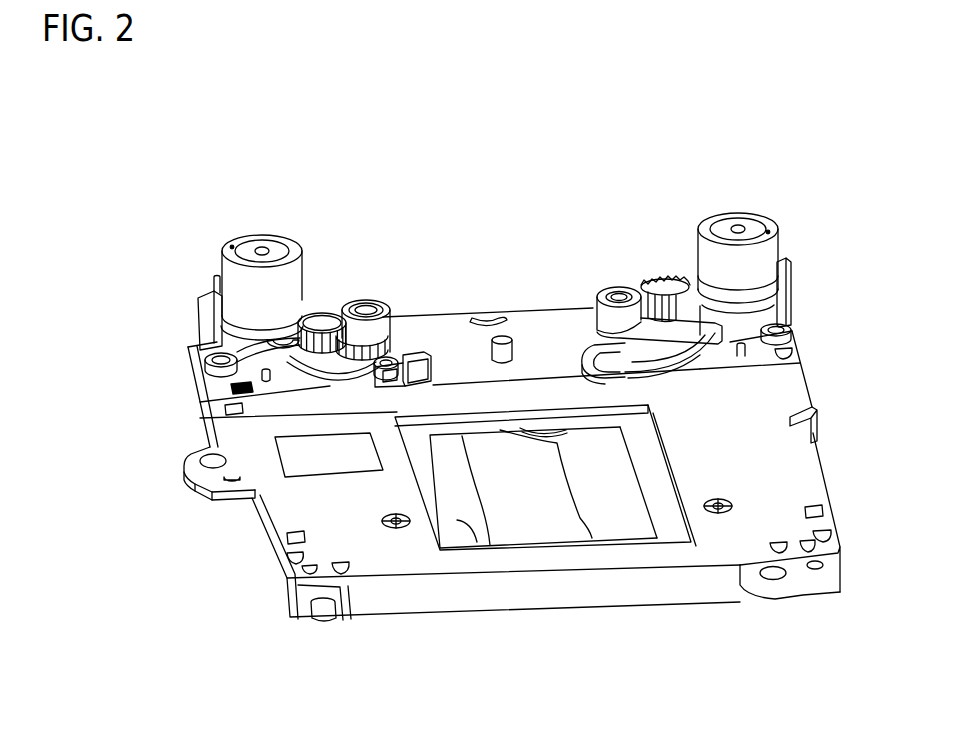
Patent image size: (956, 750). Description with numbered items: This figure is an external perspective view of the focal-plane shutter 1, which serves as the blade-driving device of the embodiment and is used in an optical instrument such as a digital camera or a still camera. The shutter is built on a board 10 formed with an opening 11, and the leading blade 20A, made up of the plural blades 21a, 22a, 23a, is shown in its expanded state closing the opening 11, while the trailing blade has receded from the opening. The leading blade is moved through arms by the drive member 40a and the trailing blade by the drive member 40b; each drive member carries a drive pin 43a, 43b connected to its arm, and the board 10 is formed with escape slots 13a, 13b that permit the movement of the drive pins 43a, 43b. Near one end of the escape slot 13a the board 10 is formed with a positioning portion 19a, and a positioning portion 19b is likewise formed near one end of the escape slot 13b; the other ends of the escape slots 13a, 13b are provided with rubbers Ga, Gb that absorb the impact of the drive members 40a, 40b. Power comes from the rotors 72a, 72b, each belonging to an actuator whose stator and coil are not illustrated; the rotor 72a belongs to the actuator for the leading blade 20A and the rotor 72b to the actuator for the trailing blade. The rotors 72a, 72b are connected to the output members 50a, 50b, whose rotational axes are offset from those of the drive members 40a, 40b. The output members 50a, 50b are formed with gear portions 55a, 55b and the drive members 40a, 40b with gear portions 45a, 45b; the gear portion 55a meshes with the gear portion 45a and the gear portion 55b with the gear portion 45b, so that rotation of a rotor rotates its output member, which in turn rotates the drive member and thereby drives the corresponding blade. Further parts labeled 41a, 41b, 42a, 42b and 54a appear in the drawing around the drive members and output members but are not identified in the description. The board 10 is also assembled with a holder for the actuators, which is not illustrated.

The focal-plane shutter 1 is at (574, 165).
The board 10 is at (413, 618).
The opening 11 is at (473, 508).
The escape slot 13a is at (230, 385).
The escape slot 13b is at (690, 387).
The positioning portion 19a is at (430, 352).
The positioning portion 19b is at (780, 313).
The leading blade 20A is at (685, 682).
The blade 21a is at (637, 513).
The blade 22a is at (557, 513).
The blade 23a is at (520, 513).
The drive member 40a is at (384, 294).
The drive member 40b is at (607, 290).
The first bearing 41a is at (398, 352).
The second bearing 41b is at (790, 327).
The first shaft bushing 42a is at (365, 306).
The second shaft bushing 42b is at (627, 289).
The drive pin 43a is at (200, 418).
The drive pin 43b is at (780, 358).
The gear portion 45a is at (392, 300).
The gear portion 45b is at (656, 288).
The output member 50a is at (305, 309).
The output member 50b is at (684, 290).
The motor holder 54a is at (302, 318).
The gear portion 55a is at (302, 312).
The gear portion 55b is at (680, 284).
The rotor 72a is at (222, 251).
The rotor 72b is at (777, 242).
The rubber Ga is at (188, 346).
The rubber Gb is at (608, 364).